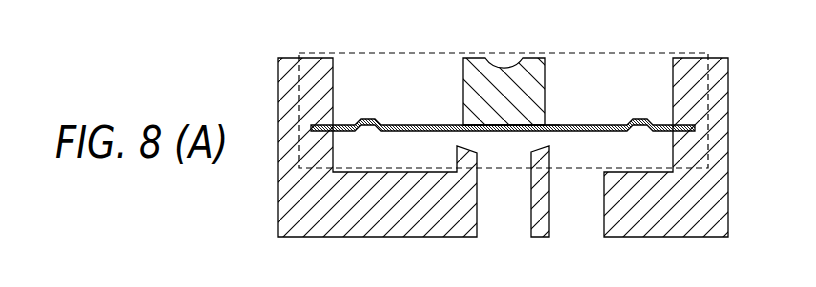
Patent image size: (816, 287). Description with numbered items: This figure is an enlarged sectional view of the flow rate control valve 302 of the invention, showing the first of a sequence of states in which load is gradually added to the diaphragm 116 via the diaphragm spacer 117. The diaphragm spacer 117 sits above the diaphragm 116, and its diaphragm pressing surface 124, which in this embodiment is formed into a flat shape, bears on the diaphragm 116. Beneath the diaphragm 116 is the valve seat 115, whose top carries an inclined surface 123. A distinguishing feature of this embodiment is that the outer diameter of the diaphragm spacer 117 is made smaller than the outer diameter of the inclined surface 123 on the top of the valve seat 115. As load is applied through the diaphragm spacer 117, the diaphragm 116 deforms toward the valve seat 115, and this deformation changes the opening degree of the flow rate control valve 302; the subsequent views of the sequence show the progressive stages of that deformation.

The valve seat 115 is at (540, 159).
The diaphragm 116 is at (407, 125).
The diaphragm spacer 117 is at (528, 87).
The inclined surface 123 is at (548, 140).
The diaphragm pressing surface 124 is at (472, 118).
The flow rate control valve 302 is at (640, 53).